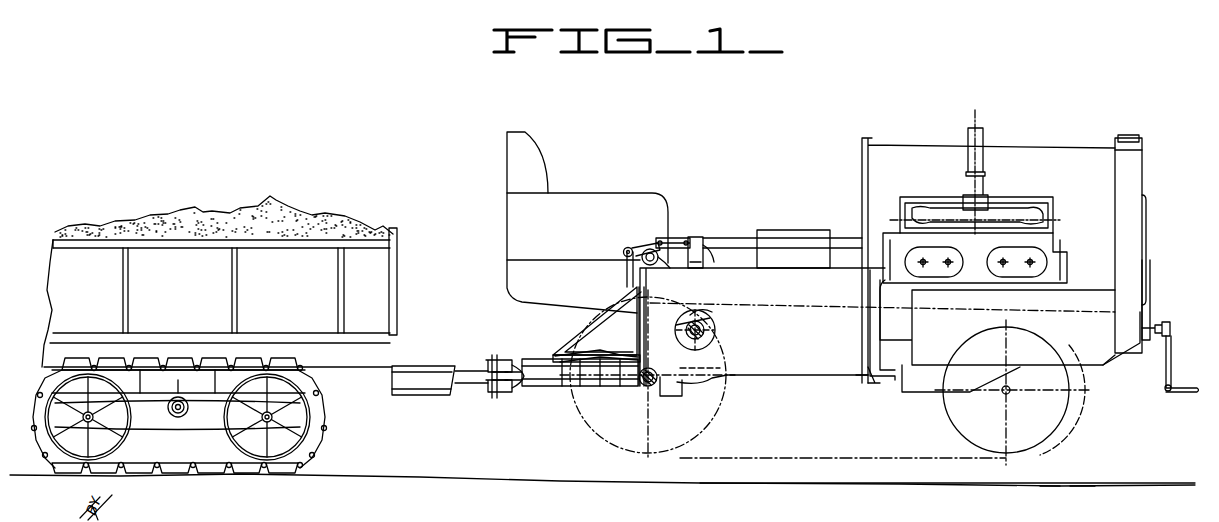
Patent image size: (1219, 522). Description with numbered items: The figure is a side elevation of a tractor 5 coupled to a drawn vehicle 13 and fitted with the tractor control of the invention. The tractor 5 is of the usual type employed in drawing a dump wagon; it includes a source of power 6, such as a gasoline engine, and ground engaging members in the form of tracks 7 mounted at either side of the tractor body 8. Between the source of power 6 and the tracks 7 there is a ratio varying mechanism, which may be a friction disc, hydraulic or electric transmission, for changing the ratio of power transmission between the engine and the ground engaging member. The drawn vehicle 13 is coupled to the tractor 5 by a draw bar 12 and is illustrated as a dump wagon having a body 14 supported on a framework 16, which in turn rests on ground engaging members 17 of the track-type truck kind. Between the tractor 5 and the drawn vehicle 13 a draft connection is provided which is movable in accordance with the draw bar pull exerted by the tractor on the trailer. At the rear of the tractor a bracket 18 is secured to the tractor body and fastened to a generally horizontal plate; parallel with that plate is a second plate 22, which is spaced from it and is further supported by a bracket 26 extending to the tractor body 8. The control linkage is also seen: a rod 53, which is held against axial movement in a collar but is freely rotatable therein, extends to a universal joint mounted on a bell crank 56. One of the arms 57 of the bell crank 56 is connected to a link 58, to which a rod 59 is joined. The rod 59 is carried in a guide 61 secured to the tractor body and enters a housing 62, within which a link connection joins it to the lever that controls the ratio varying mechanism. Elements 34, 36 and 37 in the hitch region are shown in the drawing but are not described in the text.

The tractor 5 is at (855, 390).
The source of power 6 is at (1056, 203).
The tracks 7 is at (848, 462).
The tractor body 8 is at (795, 337).
The draw bar 12 is at (548, 384).
The drawn vehicle 13 is at (186, 294).
The body 14 is at (397, 270).
The framework 16 is at (383, 390).
The ground engaging members 17 is at (314, 446).
The bracket 18 is at (578, 338).
The second plate 22 is at (598, 380).
The bracket 26 is at (642, 390).
The coupling pin 34 is at (510, 388).
The coupling rod 36 is at (473, 366).
The coupling clevis 37 is at (498, 356).
The rod 53 is at (626, 277).
The bell crank 56 is at (641, 240).
The arm 57 is at (660, 264).
The link 58 is at (673, 238).
The rod 59 is at (733, 238).
The guide 61 is at (704, 262).
The housing 62 is at (786, 240).